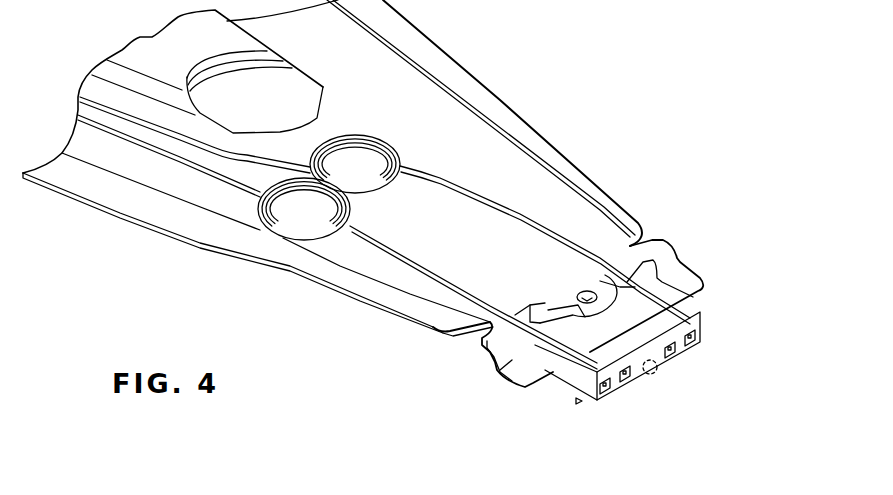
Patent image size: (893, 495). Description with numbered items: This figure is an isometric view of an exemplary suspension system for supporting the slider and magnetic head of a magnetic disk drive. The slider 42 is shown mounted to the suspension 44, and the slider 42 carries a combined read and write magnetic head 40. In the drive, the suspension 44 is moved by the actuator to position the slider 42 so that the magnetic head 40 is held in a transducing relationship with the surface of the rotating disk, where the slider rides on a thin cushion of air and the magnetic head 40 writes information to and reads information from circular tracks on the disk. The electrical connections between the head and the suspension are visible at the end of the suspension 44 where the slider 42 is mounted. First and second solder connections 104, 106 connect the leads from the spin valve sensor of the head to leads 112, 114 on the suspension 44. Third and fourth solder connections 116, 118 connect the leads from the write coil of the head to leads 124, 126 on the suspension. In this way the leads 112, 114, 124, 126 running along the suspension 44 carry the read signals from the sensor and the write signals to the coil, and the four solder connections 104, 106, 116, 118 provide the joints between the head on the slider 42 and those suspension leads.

The magnetic head 40 is at (660, 378).
The slider 42 is at (542, 394).
The suspension 44 is at (502, 98).
The first solder connection 104 is at (597, 390).
The second solder connection 106 is at (693, 337).
The lead 112 is at (373, 247).
The lead 114 is at (558, 233).
The third solder connection 116 is at (624, 380).
The fourth solder connection 118 is at (673, 350).
The lead 124 is at (422, 262).
The lead 126 is at (480, 202).